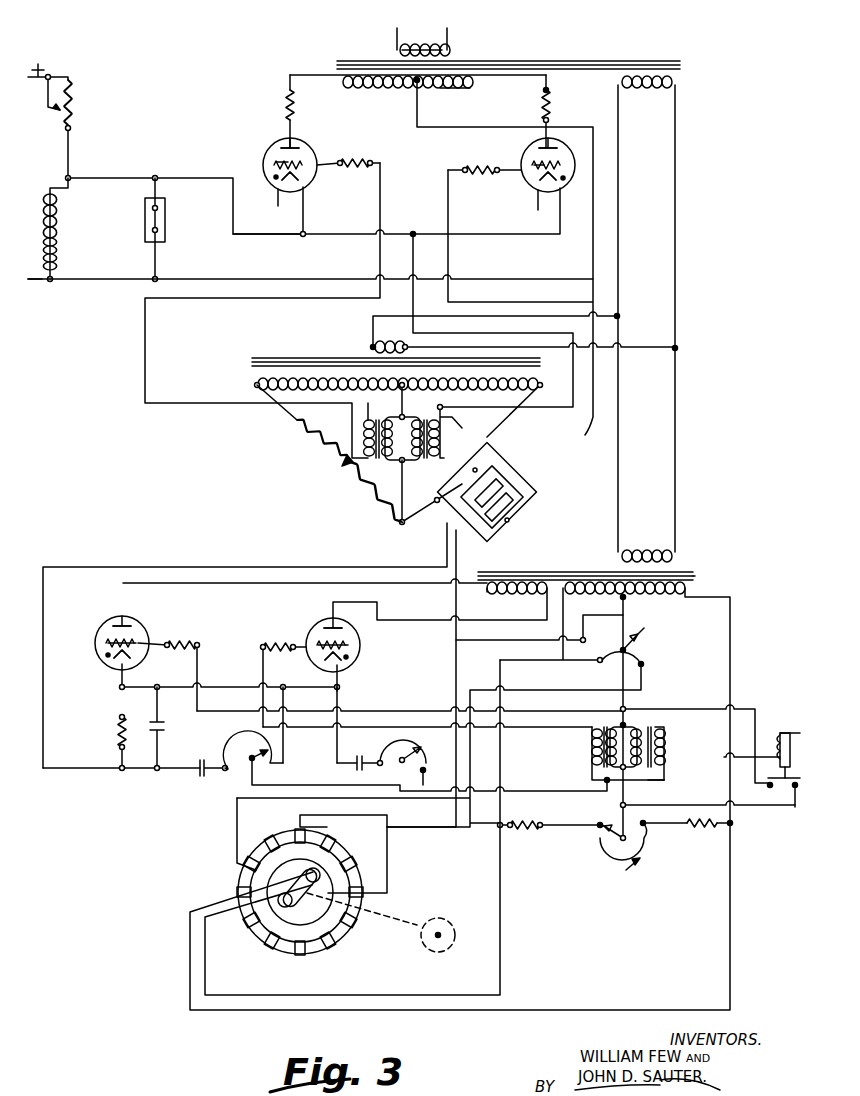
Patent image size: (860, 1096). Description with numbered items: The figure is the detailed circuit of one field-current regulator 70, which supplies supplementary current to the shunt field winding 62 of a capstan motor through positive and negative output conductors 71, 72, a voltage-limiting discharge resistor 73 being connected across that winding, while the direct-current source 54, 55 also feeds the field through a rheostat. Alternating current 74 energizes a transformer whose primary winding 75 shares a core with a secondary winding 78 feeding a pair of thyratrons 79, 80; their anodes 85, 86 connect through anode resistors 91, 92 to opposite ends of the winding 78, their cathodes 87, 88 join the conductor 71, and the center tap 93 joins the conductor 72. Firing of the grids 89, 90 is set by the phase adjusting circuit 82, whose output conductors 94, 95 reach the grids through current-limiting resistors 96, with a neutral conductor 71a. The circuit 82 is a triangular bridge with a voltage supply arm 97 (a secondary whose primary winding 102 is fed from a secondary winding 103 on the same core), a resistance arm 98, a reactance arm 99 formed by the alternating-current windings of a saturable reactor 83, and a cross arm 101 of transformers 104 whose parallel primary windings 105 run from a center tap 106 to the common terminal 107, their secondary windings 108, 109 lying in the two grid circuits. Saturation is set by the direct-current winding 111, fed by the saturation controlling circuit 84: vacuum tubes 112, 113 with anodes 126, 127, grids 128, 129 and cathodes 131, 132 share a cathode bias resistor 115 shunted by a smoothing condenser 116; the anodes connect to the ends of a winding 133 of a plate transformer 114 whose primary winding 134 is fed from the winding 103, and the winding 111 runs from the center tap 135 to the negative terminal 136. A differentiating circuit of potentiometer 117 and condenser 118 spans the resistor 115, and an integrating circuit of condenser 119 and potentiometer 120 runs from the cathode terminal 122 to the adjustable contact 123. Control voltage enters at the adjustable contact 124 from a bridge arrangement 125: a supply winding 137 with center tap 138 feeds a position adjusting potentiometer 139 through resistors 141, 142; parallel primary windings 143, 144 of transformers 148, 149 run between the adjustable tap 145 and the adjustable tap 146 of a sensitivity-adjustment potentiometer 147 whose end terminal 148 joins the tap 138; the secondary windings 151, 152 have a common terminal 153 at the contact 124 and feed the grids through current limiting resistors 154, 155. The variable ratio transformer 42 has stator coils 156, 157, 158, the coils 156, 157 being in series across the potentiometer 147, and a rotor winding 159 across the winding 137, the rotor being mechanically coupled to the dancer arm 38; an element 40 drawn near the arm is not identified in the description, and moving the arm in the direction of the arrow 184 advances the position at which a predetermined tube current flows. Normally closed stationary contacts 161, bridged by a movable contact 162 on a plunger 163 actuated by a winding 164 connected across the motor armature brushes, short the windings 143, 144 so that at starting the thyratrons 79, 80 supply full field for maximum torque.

The direct-current source 54 is at (48, 77).
The direct-current source 55 is at (42, 280).
The potential field winding 62 is at (62, 237).
The positive output conductor 71 is at (106, 178).
The neutral conductor 71a is at (405, 305).
The negative output conductor 72 is at (92, 279).
The voltage-limiting discharge resistor 73 is at (165, 222).
The source of alternating current 74 is at (446, 27).
The primary winding 75 is at (450, 50).
The secondary winding 78 is at (460, 88).
The thyratron 79 is at (272, 146).
The thyratron 80 is at (536, 182).
The excitation phase adjusting circuit 82 is at (345, 458).
The saturable core reactor 83 is at (513, 490).
The anode 85 is at (297, 148).
The anode 86 is at (530, 150).
The cathode 87 is at (300, 180).
The cathode 88 is at (540, 195).
The control electrode 89 is at (276, 160).
The control electrode 90 is at (532, 167).
The anode resistor 91 is at (283, 101).
The anode resistor 92 is at (552, 106).
The center tap 93 is at (410, 86).
The variable phase output conductor 94 is at (380, 251).
The variable phase output conductor 95 is at (450, 258).
The current-limiting resistor 96 is at (366, 160).
The voltage supply arm 97 is at (327, 387).
The resistance arm 98 is at (320, 454).
The reactance arm 99 is at (522, 512).
The cross arm 101 is at (432, 502).
The primary winding 102 is at (523, 336).
The secondary winding 103 is at (656, 92).
The transformer 104 is at (416, 450).
The primary winding 105 is at (391, 491).
The center tap 106 is at (404, 388).
The common terminal 107 is at (402, 525).
The secondary winding 108 is at (368, 440).
The secondary winding 109 is at (436, 440).
The direct-current winding 111 is at (500, 470).
The high vacuum tube 112 is at (105, 625).
The high vacuum tube 113 is at (362, 641).
The transformer 114 is at (700, 572).
The cathode bias resistor 115 is at (120, 722).
The smoothing condenser 116 is at (165, 724).
The potentiometer 117 is at (247, 746).
The condenser 118 is at (200, 780).
The condenser 119 is at (357, 756).
The potentiometer 120 is at (445, 726).
The cathode terminal 122 is at (340, 689).
The adjustable contact 123 is at (273, 764).
The adjustable contact 124 is at (400, 766).
The bridge arrangement 125 is at (685, 679).
The anode 126 is at (128, 625).
The anode 127 is at (331, 620).
The control electrode 128 is at (138, 641).
The control electrode 129 is at (318, 638).
The cathode 131 is at (130, 656).
The cathode 132 is at (358, 653).
The secondary winding 133 is at (336, 600).
The primary winding 134 is at (648, 550).
The center tap 135 is at (520, 596).
The negative end terminal 136 is at (121, 772).
The supply winding 137 is at (695, 590).
The center tap 138 is at (626, 598).
The position adjusting potentiometer 139 is at (612, 850).
The resistor 141 is at (532, 834).
The resistor 142 is at (698, 832).
The primary transformer winding 143 is at (620, 711).
The primary transformer winding 144 is at (626, 723).
The adjustable tap 145 is at (606, 829).
The adjustable tap 146 is at (620, 664).
The sensitivity-adjustment potentiometer 147 is at (648, 661).
The end terminal 148 is at (598, 662).
The transformer 149 is at (662, 781).
The secondary winding 151 is at (592, 751).
The secondary winding 152 is at (662, 749).
The common terminal 153 is at (605, 781).
The current limiting resistor 154 is at (284, 652).
The current limiting resistor 155 is at (198, 642).
The stator coil 156 is at (262, 840).
The stator coil 157 is at (380, 862).
The stator coil 158 is at (288, 954).
The rotor winding 159 is at (307, 875).
The normally closed contacts 161 is at (711, 797).
The movable contact 162 is at (795, 790).
The plunger 163 is at (731, 763).
The winding 164 is at (780, 735).
The arrow 184 is at (640, 868).
The dancer arm 38 is at (405, 920).
The cam 40 is at (452, 947).
The variable ratio transformer 42 is at (369, 951).
The current supply source 70 is at (396, 207).
The saturation controlling circuit 84 is at (229, 671).